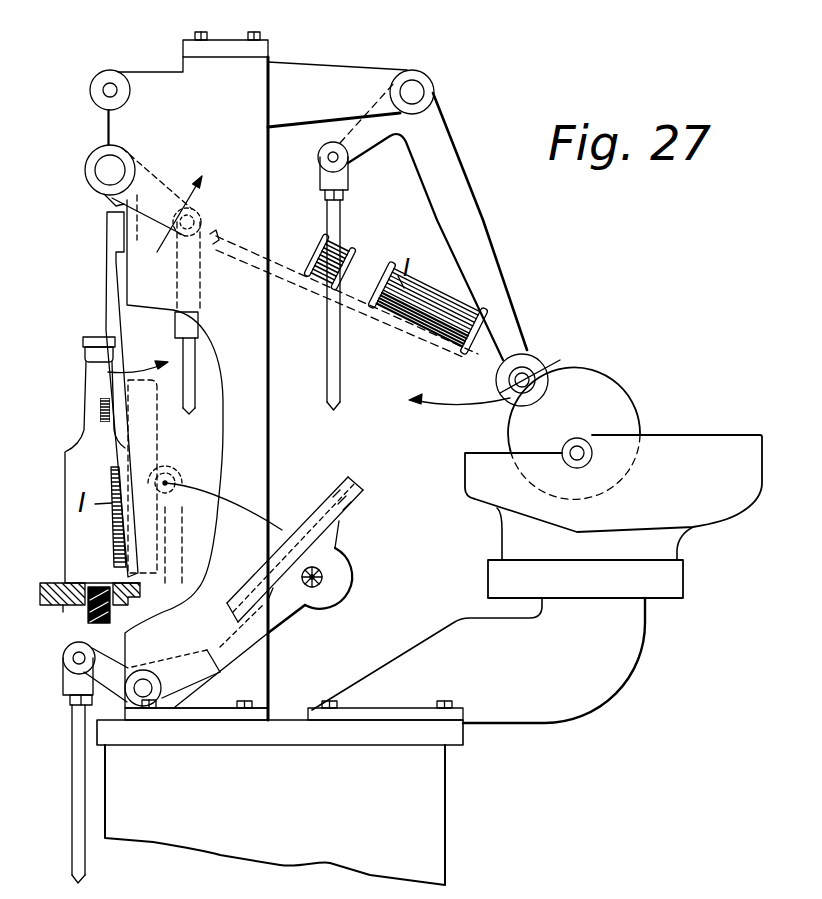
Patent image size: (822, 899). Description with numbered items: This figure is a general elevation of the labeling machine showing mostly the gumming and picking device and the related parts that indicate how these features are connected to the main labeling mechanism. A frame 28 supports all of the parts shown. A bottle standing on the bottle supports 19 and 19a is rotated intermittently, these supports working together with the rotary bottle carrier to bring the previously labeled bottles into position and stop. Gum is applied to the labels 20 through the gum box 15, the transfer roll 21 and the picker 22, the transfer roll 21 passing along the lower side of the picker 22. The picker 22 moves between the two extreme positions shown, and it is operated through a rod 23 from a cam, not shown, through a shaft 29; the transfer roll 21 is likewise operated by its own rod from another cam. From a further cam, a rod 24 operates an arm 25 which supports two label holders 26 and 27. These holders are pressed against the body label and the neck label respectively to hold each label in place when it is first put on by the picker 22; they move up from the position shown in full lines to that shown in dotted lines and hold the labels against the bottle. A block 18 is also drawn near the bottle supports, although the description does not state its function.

The gum box 15 is at (688, 446).
The block 18 is at (100, 624).
The bottle support 19 is at (64, 608).
The bottle support 19a is at (124, 598).
The labels 20 is at (447, 290).
The transfer roll 21 is at (508, 399).
The picker 22 is at (101, 310).
The rod 23 is at (184, 393).
The rod 24 is at (78, 795).
The arm 25 is at (282, 620).
The label holder 26 is at (306, 555).
The label holder 27 is at (343, 495).
The frame 28 is at (420, 798).
The shaft 29 is at (110, 170).